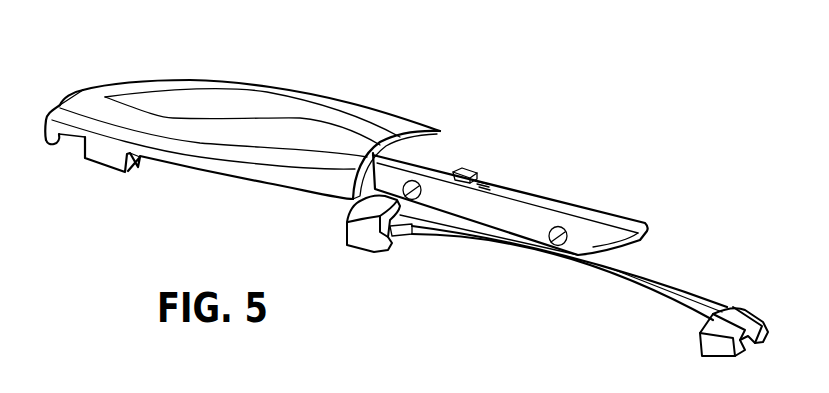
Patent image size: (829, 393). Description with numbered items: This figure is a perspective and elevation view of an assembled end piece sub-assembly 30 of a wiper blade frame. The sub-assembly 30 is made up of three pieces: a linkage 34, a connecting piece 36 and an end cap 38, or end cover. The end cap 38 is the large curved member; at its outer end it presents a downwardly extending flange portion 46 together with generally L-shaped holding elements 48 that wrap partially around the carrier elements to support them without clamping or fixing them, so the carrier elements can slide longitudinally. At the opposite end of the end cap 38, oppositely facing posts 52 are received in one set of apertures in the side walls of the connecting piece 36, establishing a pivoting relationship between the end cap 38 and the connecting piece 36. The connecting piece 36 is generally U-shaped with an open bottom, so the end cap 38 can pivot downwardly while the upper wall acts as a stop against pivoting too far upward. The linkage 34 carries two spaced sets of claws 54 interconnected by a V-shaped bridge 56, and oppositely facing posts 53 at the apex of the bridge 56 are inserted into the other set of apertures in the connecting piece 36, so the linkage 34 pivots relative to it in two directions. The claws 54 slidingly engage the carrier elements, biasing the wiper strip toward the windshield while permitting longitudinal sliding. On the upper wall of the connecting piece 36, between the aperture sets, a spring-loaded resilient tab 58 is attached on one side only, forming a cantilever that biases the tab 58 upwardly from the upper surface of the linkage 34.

The end piece sub-assembly 30 is at (528, 205).
The linkage 34 is at (559, 272).
The connecting piece 36 is at (512, 162).
The end cap 38 is at (238, 130).
The downwardly extending flange portion 46 is at (51, 144).
The holding elements 48 is at (118, 163).
The posts 52 is at (414, 182).
The posts 53 is at (561, 229).
The claws 54 is at (357, 236).
The V-shaped bridge 56 is at (660, 290).
The resilient tab 58 is at (466, 167).